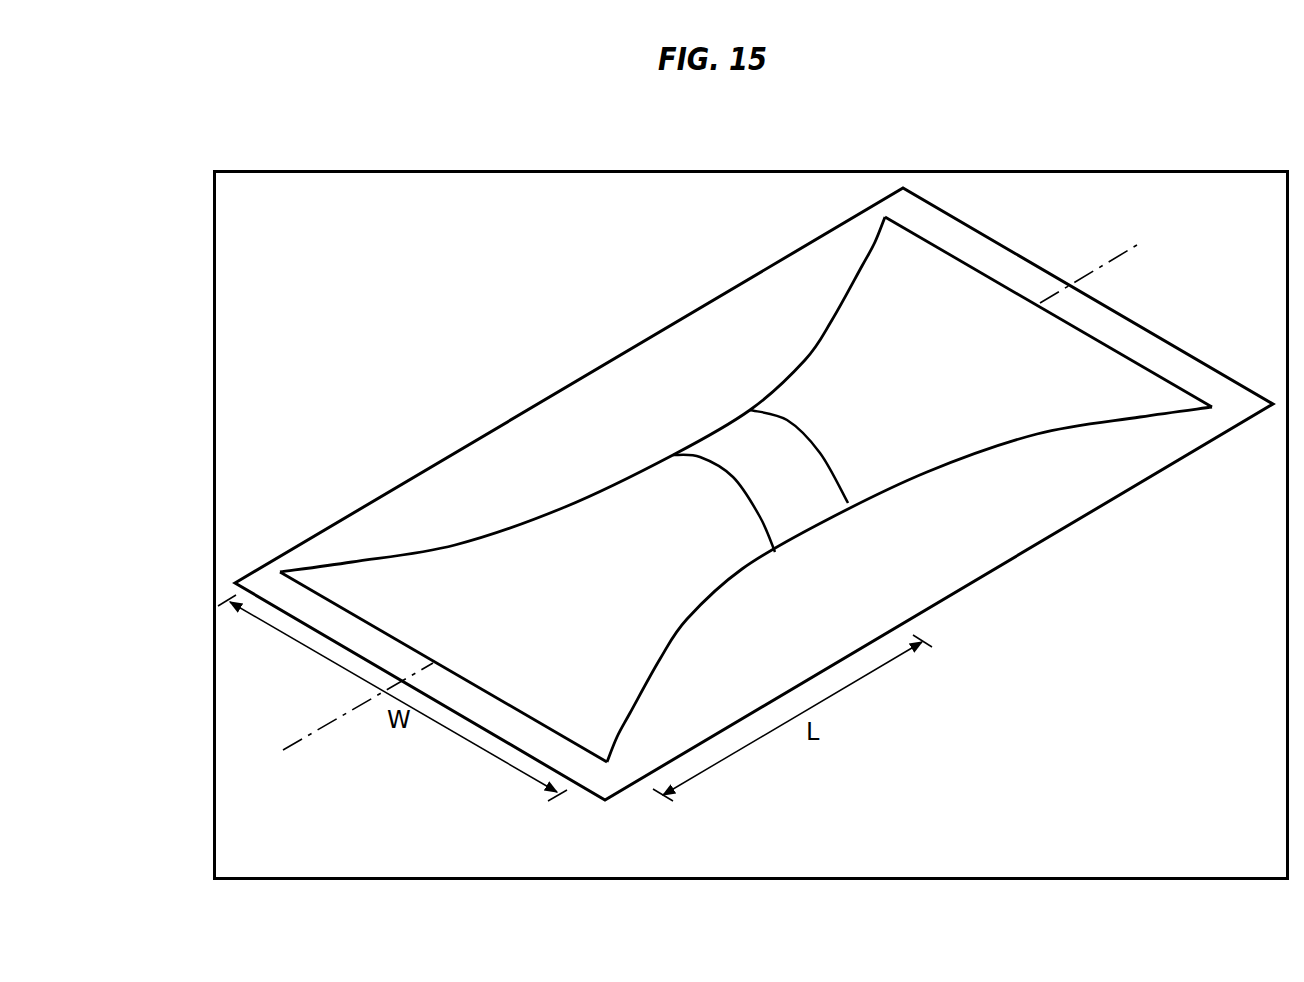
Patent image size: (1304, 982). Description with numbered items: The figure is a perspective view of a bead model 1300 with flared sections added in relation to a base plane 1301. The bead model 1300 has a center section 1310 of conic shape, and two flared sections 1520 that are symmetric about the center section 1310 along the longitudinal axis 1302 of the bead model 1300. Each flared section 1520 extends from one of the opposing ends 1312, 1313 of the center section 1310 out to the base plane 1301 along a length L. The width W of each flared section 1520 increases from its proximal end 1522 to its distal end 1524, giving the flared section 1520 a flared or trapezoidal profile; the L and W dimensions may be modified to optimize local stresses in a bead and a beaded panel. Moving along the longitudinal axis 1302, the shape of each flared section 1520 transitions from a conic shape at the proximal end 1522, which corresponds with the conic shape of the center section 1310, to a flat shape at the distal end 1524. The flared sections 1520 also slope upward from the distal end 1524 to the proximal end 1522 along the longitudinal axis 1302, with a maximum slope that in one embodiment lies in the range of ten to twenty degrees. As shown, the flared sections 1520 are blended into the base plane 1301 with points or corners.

The bead model 1300 is at (302, 170).
The base plane 1301 is at (660, 357).
The longitudinal axis 1302 is at (318, 733).
The center section 1310 is at (746, 528).
The end of center section 1312 is at (703, 460).
The end of center section 1313 is at (790, 420).
The flared section 1520 is at (1008, 423).
The proximal end 1522 is at (775, 478).
The distal end 1524 is at (1122, 353).